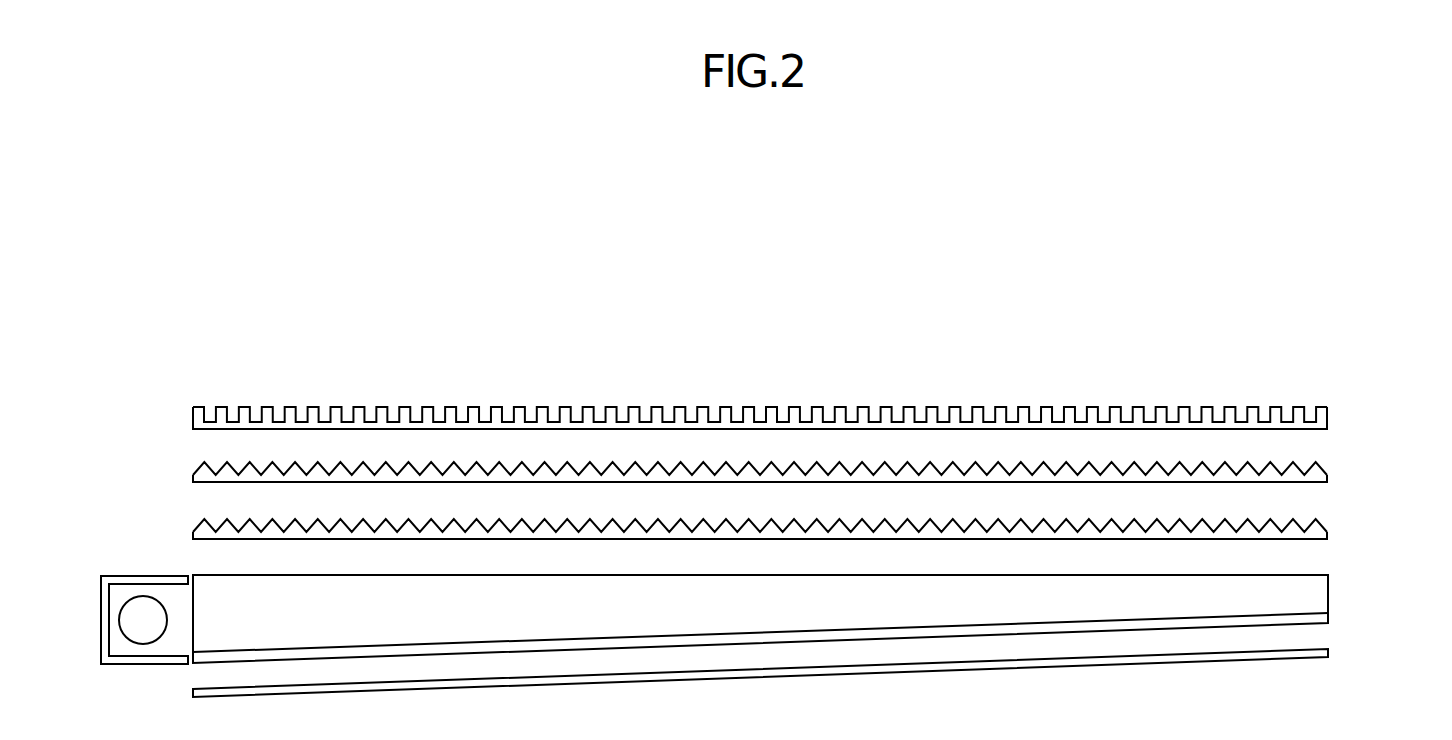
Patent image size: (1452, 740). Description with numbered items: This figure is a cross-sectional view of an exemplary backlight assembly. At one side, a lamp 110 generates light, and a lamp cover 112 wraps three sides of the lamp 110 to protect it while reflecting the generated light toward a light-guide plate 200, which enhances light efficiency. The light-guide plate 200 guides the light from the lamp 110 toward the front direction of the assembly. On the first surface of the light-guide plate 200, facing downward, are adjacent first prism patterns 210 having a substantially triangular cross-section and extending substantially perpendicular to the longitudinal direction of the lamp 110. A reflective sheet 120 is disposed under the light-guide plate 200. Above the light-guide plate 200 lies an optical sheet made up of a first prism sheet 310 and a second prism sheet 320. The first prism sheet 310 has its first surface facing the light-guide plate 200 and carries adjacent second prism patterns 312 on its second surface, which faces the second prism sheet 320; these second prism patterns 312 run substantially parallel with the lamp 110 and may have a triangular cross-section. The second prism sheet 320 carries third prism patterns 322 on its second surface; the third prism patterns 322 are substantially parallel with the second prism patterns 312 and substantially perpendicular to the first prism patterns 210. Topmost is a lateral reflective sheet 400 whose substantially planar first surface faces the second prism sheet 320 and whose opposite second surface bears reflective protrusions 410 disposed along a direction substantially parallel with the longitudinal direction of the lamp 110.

The lamp 110 is at (142, 597).
The lamp cover 112 is at (122, 580).
The reflective sheet 120 is at (1328, 650).
The light-guide plate 200 is at (1328, 590).
The first prism patterns 210 is at (1328, 613).
The first prism sheet 310 is at (1327, 537).
The second prism patterns 312 is at (1330, 519).
The second prism sheet 320 is at (1327, 480).
The third prism patterns 322 is at (1330, 462).
The lateral reflective sheet 400 is at (1327, 428).
The reflective protrusions 410 is at (1328, 408).